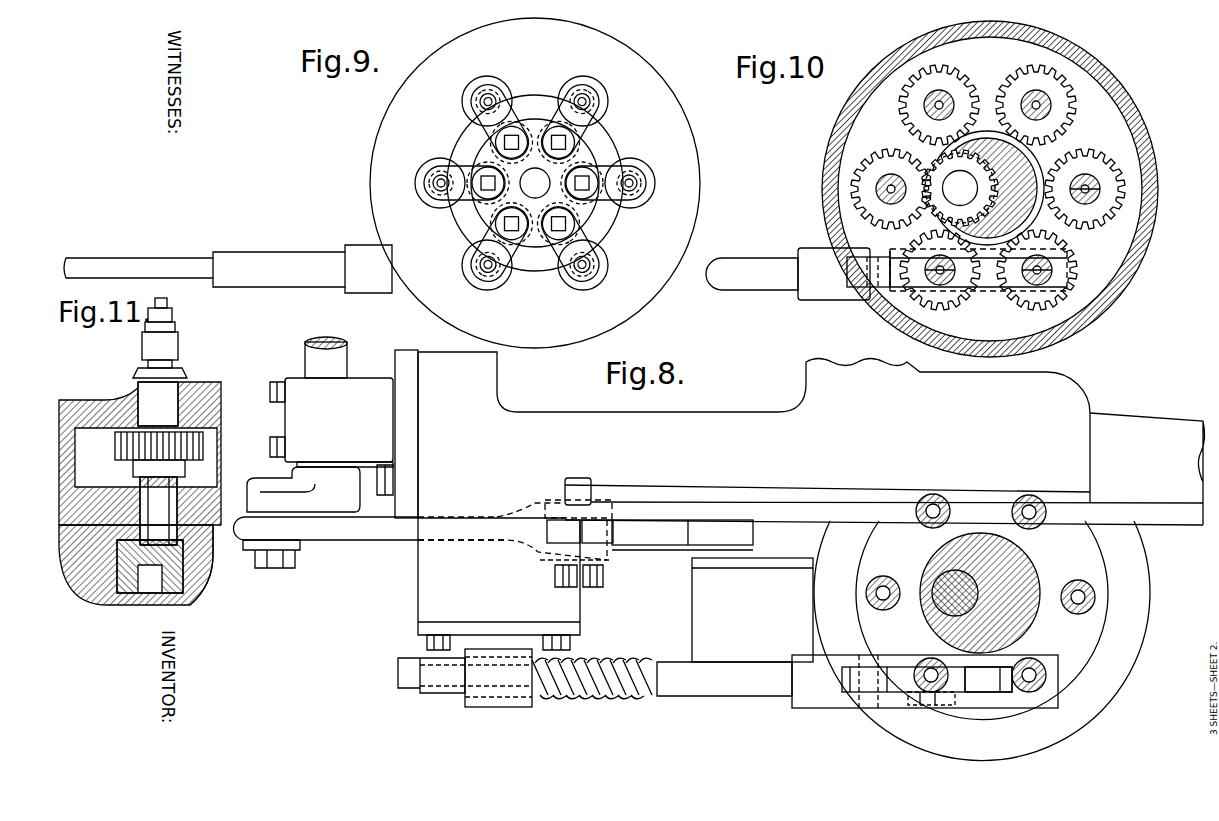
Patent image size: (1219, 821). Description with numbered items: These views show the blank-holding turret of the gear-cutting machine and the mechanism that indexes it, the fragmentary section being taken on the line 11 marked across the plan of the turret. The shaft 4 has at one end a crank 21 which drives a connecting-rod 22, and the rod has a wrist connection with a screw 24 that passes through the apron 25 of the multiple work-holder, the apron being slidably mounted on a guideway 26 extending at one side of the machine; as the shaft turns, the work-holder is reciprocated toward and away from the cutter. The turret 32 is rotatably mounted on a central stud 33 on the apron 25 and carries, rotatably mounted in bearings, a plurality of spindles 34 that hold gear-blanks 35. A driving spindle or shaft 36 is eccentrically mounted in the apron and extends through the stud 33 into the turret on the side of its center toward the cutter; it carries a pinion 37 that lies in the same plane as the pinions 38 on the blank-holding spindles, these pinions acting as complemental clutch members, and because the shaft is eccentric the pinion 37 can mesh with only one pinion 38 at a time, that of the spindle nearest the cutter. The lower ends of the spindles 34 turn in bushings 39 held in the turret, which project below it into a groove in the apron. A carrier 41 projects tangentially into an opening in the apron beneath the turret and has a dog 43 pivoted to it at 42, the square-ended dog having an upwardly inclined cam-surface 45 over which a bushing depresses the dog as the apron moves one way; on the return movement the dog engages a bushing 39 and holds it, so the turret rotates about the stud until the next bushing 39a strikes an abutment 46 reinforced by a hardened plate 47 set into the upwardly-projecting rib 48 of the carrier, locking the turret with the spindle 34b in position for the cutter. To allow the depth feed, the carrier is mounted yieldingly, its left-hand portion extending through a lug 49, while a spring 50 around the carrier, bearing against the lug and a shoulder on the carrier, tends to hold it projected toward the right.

In FIG. 8, the shaft 4 is at (335, 360).
In FIG. 9, the pivot pin 11 is at (472, 222).
In FIG. 8, the crank 21 is at (316, 500).
In FIG. 8, the connecting-rod 22 is at (360, 535).
In FIG. 8, the screw 24 is at (690, 552).
In FIG. 8, the apron 25 is at (1090, 612).
In FIG. 8, the guideway 26 is at (710, 495).
In FIG. 9, the turret 32 is at (665, 127).
In FIG. 10, the turret 32 is at (833, 127).
In FIG. 11, the turret 32 is at (120, 400).
In FIG. 10, the central stud 33 is at (1045, 163).
In FIG. 8, the central stud 33 is at (1015, 585).
In FIG. 9, the spindles 34 is at (636, 172).
In FIG. 10, the spindles 34 is at (1085, 207).
In FIG. 11, the spindles 34 is at (165, 390).
In FIG. 9, the spindle 34b is at (438, 182).
In FIG. 9, the gear-blanks 35 is at (418, 193).
In FIG. 11, the gear-blanks 35 is at (170, 350).
In FIG. 10, the driving spindle or shaft 36 is at (950, 193).
In FIG. 8, the driving spindle or shaft 36 is at (935, 582).
In FIG. 10, the pinion 37 is at (942, 162).
In FIG. 10, the pinions 38 is at (945, 85).
In FIG. 11, the pinions 38 is at (180, 444).
In FIG. 8, the bushings 39 is at (945, 496).
In FIG. 11, the bushing 39a is at (215, 552).
In FIG. 8, the bushing 39a is at (945, 692).
In FIG. 9, the carrier 41 is at (282, 258).
In FIG. 10, the carrier 41 is at (772, 258).
In FIG. 11, the carrier 41 is at (110, 590).
In FIG. 8, the carrier 41 is at (705, 680).
In FIG. 10, the pivot 42 is at (850, 300).
In FIG. 8, the pivot 42 is at (855, 700).
In FIG. 10, the dog 43 is at (980, 290).
In FIG. 8, the dog 43 is at (888, 690).
In FIG. 8, the cam-surface 45 is at (985, 690).
In FIG. 8, the abutment 46 is at (912, 697).
In FIG. 11, the hardened plate 47 is at (120, 565).
In FIG. 8, the hardened plate 47 is at (930, 706).
In FIG. 10, the upwardly-projecting rib 48 is at (905, 297).
In FIG. 11, the upwardly-projecting rib 48 is at (117, 548).
In FIG. 8, the upwardly-projecting rib 48 is at (903, 700).
In FIG. 8, the lug 49 is at (497, 698).
In FIG. 8, the spring 50 is at (605, 697).